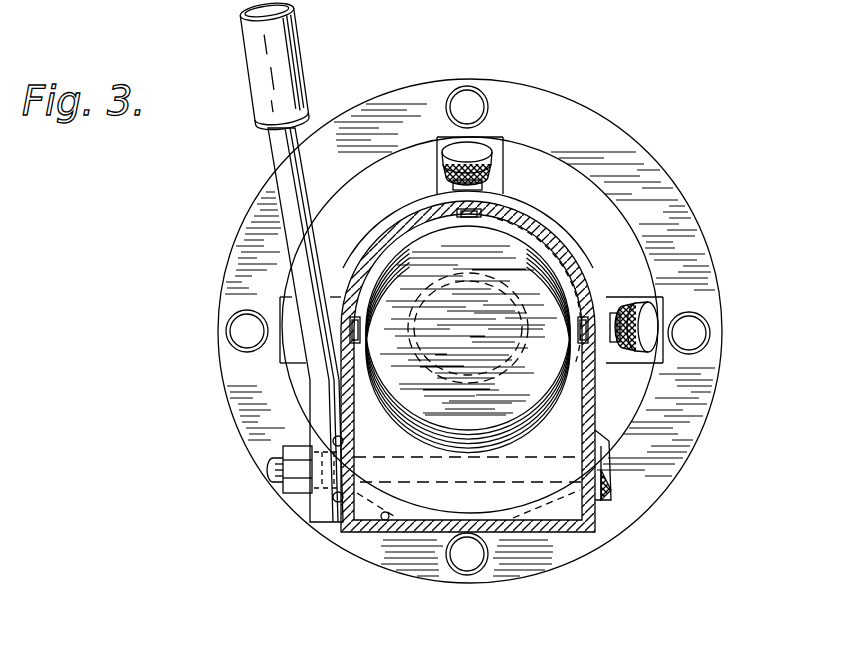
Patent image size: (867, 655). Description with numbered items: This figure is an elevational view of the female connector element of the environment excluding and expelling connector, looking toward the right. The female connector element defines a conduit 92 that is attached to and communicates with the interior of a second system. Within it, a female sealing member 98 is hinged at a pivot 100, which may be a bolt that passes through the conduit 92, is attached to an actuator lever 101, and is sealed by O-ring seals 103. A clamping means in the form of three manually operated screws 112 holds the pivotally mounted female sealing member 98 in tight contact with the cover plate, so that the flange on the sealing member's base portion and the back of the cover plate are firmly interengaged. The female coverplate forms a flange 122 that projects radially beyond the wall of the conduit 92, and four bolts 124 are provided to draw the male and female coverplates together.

The conduit 92 is at (383, 519).
The female sealing member 98 is at (372, 408).
The pivot 100 is at (305, 475).
The actuator lever 101 is at (281, 147).
The O-ring seals 103 is at (337, 499).
The manually operated screws 112 is at (476, 153).
The flange 122 is at (636, 166).
The bolts 124 is at (470, 107).